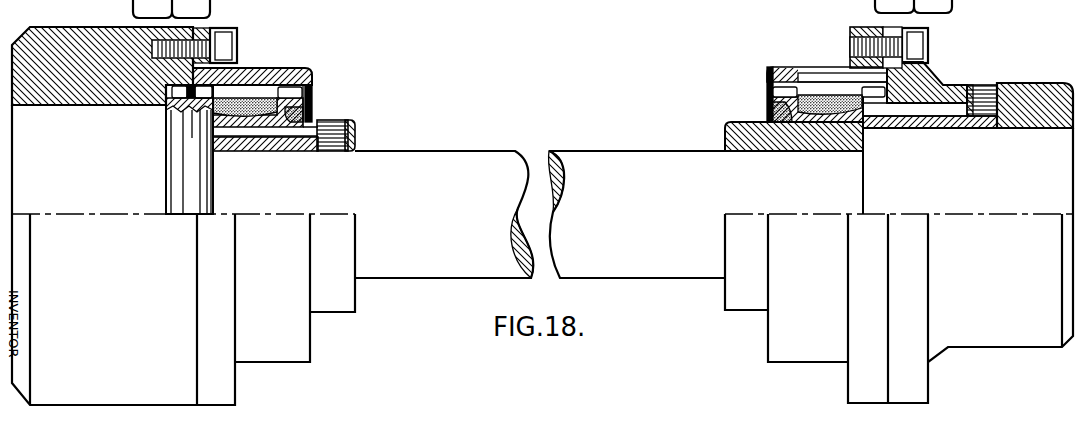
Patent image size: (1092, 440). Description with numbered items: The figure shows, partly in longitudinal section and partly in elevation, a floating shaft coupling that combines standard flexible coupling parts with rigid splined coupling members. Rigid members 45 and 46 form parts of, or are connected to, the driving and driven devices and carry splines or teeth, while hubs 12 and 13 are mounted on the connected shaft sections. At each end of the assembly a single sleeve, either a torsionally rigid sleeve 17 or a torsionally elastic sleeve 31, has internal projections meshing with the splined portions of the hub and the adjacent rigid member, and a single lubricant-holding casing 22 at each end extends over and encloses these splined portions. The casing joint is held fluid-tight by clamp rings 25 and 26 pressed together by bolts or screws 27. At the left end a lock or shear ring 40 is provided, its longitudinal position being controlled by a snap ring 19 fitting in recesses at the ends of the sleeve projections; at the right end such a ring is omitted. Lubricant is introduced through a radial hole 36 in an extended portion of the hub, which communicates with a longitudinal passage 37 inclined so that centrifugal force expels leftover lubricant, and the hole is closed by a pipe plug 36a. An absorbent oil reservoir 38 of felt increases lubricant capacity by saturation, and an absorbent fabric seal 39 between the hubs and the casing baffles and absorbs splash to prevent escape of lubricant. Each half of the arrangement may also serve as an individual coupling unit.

The hub 12 is at (257, 147).
The hub 13 is at (808, 147).
The sleeve 17 is at (245, 80).
The snap ring 19 is at (172, 105).
The lubricant-holding casing 22 is at (260, 97).
The clamp ring 25 is at (871, 27).
The clamp ring 26 is at (207, 30).
The bolts or screws 27 is at (218, 52).
The torsionally elastic sleeve 31 is at (835, 77).
The radial hole 36 is at (330, 122).
The pipe plug 36a is at (346, 124).
The longitudinal passage 37 is at (290, 137).
The absorbent oil reservoir 38 is at (306, 70).
The absorbent fabric seal 39 is at (300, 113).
The shear ring 40 is at (192, 120).
The rigid member 45 is at (80, 97).
The rigid member 46 is at (1040, 120).